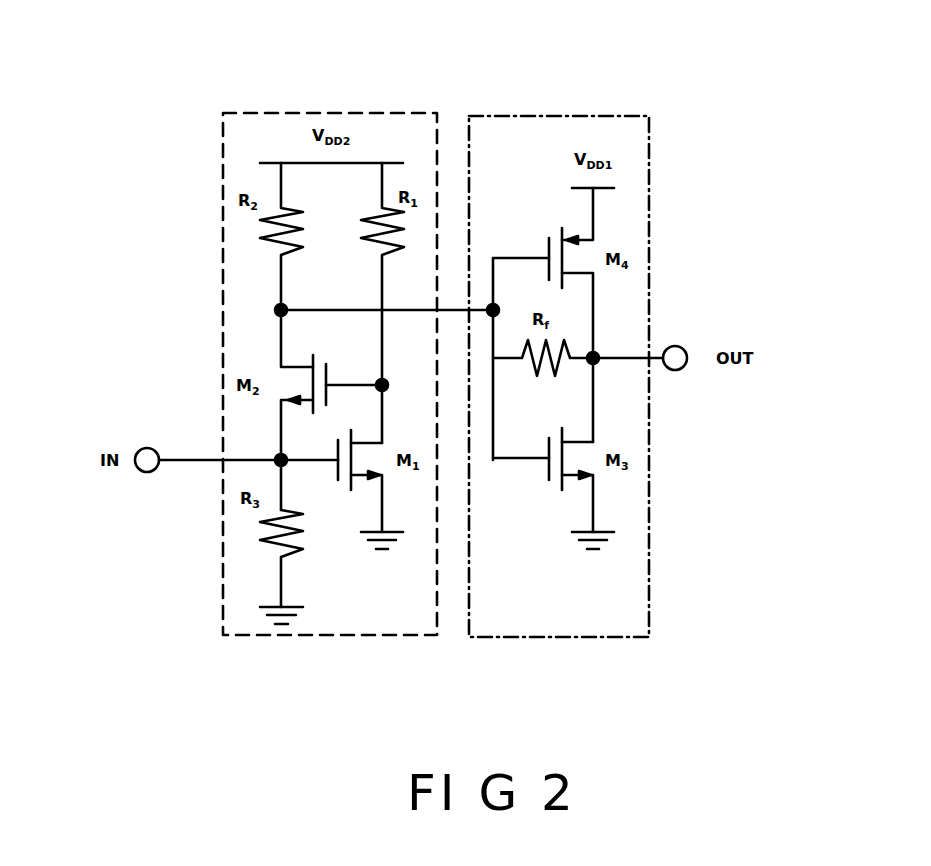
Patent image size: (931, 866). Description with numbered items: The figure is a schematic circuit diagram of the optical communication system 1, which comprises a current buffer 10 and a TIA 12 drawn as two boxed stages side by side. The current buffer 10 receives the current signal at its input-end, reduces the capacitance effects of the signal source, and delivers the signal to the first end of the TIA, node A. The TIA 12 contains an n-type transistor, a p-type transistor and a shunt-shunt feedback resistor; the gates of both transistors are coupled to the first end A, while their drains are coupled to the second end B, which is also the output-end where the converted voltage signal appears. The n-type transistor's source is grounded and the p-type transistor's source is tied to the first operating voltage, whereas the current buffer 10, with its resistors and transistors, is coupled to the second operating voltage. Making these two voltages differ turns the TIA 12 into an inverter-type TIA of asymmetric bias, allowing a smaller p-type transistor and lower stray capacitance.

The optical communication system 1 is at (556, 72).
The current buffer 10 is at (338, 637).
The TIA 12 is at (558, 637).
The first end of the TIA A is at (493, 258).
The second end of the TIA B is at (597, 354).